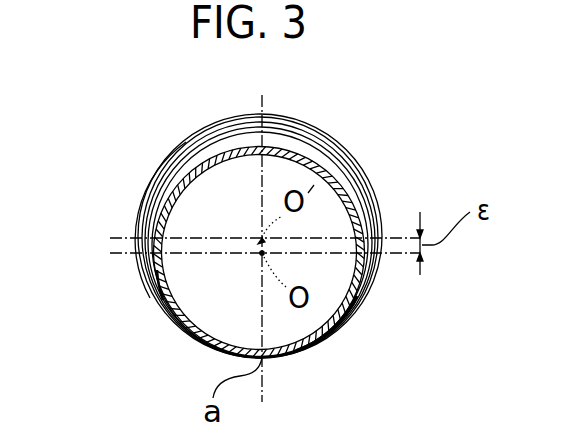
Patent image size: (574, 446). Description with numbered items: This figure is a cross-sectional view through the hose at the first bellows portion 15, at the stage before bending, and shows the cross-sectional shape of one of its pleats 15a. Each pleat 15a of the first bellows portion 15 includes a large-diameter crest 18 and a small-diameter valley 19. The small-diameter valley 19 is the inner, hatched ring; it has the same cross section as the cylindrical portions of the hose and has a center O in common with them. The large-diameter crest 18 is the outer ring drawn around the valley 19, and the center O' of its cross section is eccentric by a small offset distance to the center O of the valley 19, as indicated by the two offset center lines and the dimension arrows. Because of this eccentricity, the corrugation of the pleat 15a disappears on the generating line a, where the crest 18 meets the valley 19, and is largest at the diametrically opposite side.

The first bellows portion 15 is at (277, 211).
The pleat 15a is at (197, 131).
The large-diameter crest 18 is at (291, 115).
The small-diameter valley 19 is at (232, 156).